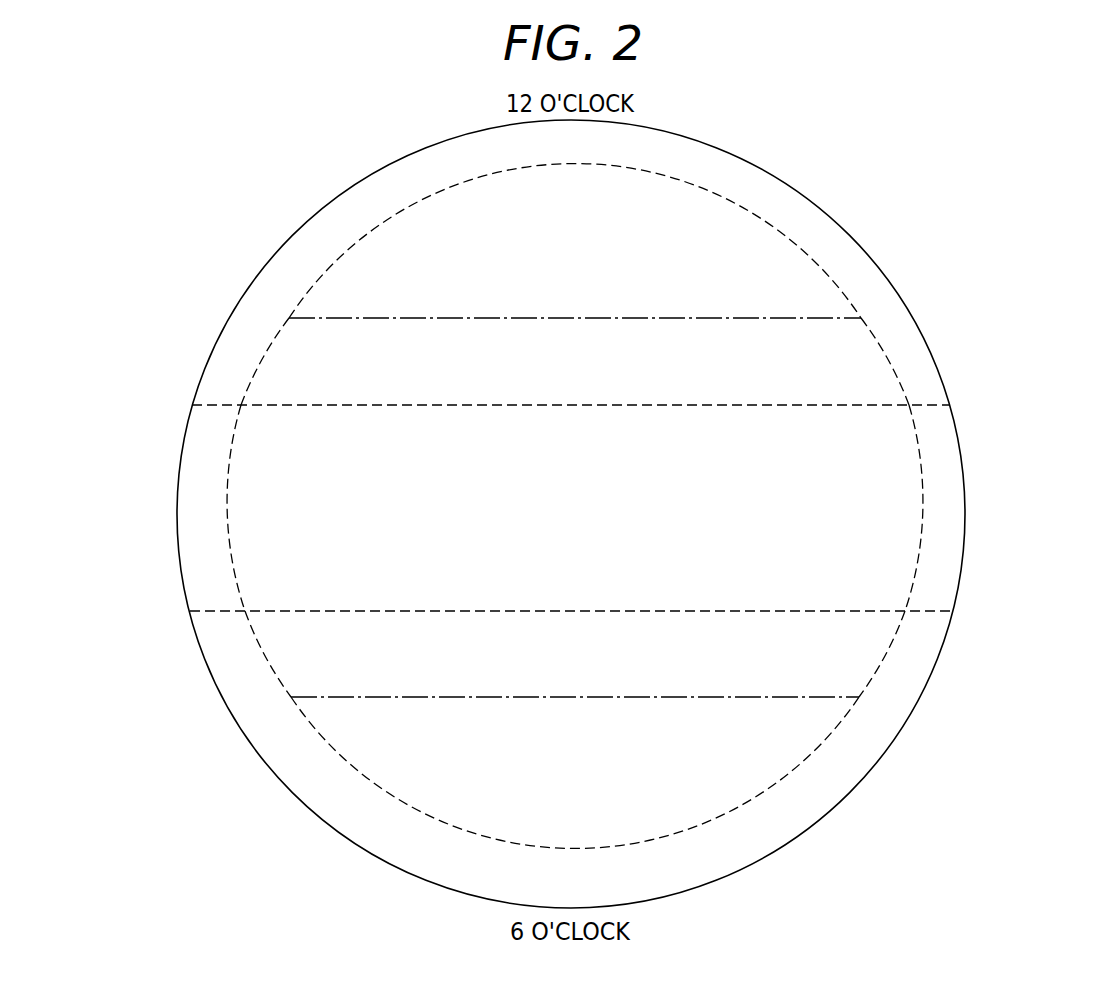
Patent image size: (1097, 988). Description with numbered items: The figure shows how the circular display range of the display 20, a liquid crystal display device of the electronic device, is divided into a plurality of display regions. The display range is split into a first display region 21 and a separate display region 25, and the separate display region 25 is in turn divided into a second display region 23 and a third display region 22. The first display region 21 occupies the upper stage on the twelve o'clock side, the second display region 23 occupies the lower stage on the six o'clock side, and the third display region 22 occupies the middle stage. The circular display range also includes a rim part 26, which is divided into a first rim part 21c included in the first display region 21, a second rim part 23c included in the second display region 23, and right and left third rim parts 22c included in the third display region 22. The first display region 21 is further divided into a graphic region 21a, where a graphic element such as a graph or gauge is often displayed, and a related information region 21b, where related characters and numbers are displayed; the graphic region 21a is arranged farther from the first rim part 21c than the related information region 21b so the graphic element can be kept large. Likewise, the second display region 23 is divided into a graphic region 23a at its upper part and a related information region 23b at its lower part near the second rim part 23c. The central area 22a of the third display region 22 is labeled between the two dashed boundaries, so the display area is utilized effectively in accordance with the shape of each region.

The display 20 is at (748, 144).
The first display region 21 is at (972, 133).
The graphic region 21a is at (588, 378).
The related information region 21b is at (588, 267).
The first rim part 21c is at (367, 215).
The third display region 22 is at (972, 405).
The third display region middle area 22a is at (588, 517).
The third rim part 22c is at (210, 508).
The second display region 23 is at (972, 611).
The graphic region 23a is at (588, 675).
The related information region 23b is at (588, 790).
The second rim part 23c is at (363, 808).
The separate display region 25 is at (1033, 488).
The rim part 26 is at (90, 180).